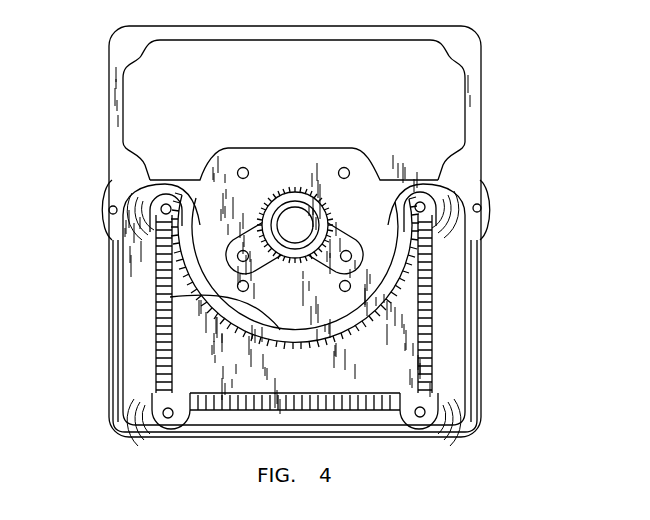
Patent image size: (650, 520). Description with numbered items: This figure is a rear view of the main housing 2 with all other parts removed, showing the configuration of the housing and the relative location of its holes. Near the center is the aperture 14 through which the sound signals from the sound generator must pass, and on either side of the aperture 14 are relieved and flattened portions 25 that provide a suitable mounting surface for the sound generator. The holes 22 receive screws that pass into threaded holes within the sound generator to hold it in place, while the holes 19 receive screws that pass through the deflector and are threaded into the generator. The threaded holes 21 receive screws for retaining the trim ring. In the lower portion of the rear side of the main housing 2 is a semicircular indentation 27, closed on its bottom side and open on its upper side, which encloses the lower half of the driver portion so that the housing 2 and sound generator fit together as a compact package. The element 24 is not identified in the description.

The main housing 2 is at (110, 275).
The aperture 14 is at (305, 210).
The holes 19 is at (350, 286).
The holes 21 is at (481, 206).
The holes 22 is at (349, 171).
The link arm 24 is at (351, 255).
The relieved and flattened portions 25 is at (332, 226).
The semicircular indentation 27 is at (170, 297).